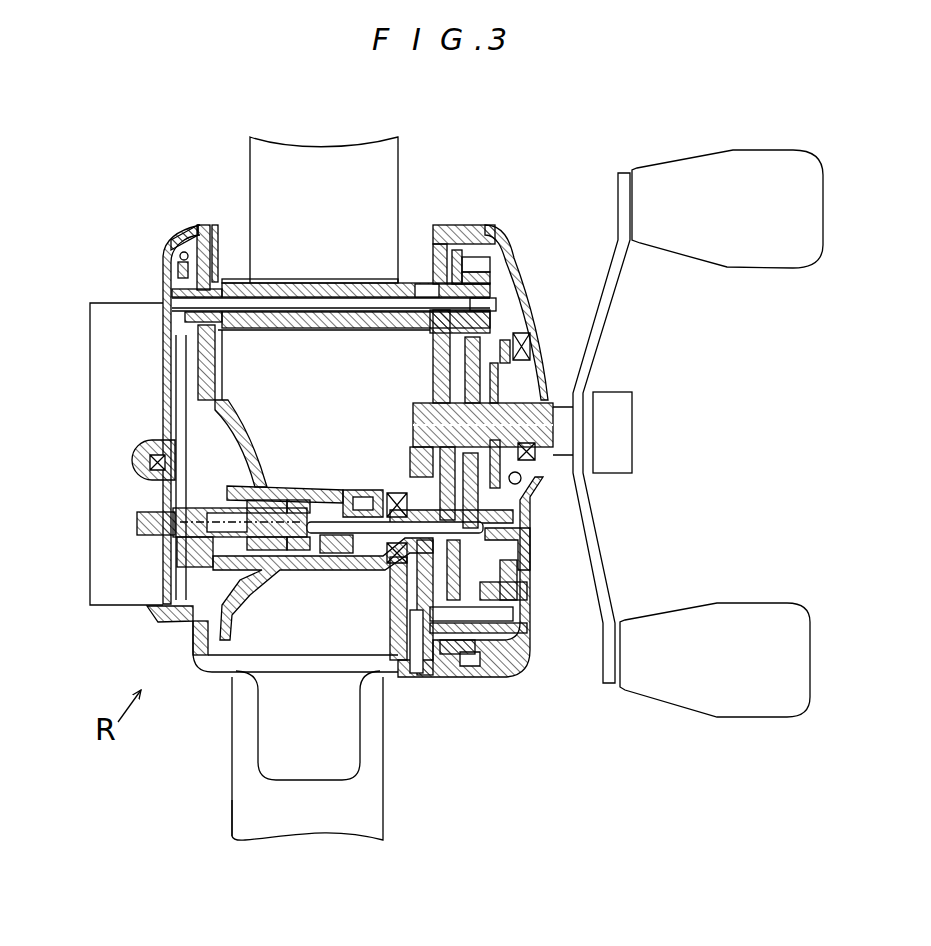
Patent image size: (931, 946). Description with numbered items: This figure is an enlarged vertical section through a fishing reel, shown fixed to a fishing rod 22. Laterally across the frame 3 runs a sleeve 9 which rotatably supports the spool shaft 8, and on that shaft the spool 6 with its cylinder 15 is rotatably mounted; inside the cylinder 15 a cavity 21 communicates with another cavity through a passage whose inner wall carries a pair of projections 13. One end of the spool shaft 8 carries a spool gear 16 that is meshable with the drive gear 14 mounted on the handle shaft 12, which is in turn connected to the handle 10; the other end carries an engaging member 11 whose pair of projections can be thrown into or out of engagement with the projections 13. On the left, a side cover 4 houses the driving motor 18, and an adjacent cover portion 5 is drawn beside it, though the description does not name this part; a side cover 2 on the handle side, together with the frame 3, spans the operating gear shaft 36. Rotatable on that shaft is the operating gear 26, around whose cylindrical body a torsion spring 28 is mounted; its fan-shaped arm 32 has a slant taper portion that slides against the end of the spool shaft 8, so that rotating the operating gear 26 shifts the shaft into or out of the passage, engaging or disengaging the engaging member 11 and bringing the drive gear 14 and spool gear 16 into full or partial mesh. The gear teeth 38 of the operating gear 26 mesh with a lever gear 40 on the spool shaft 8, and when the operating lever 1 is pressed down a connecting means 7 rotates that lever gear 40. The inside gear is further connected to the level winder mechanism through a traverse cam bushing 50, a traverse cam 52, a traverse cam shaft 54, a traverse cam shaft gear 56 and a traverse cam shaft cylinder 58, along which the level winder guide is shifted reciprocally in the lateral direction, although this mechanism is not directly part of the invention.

The operating lever 1 is at (265, 737).
The side cover 2 is at (528, 320).
The frame 3 is at (458, 226).
The side cover 4 is at (182, 229).
The cover plate 5 is at (205, 224).
The spool 6 is at (253, 465).
The connecting means 7 is at (418, 675).
The spool shaft 8 is at (367, 530).
The sleeve 9 is at (382, 548).
The handle 10 is at (604, 528).
The engaging member 11 is at (343, 508).
The handle shaft 12 is at (565, 427).
The projections 13 is at (318, 548).
The drive gear 14 is at (530, 503).
The cylinder 15 is at (294, 488).
The spool gear 16 is at (480, 550).
The driving motor 18 is at (108, 494).
The cavity 21 is at (362, 512).
The fishing rod 22 is at (372, 797).
The operating gear 26 is at (445, 650).
The torsion spring 28 is at (513, 592).
The fan-shaped arm 32 is at (485, 534).
The operating gear shaft 36 is at (523, 632).
The gear teeth 38 is at (448, 677).
The lever gear 40 is at (485, 640).
The traverse cam bushing 50 is at (426, 288).
The traverse cam 52 is at (283, 290).
The traverse cam shaft 54 is at (310, 300).
The traverse cam shaft gear 56 is at (494, 292).
The traverse cam shaft cylinder 58 is at (358, 280).